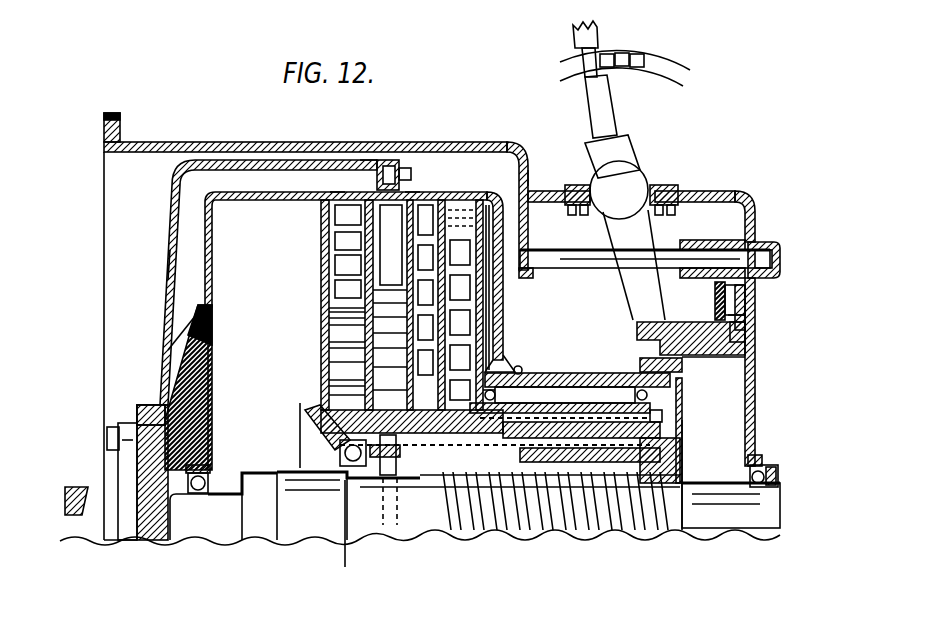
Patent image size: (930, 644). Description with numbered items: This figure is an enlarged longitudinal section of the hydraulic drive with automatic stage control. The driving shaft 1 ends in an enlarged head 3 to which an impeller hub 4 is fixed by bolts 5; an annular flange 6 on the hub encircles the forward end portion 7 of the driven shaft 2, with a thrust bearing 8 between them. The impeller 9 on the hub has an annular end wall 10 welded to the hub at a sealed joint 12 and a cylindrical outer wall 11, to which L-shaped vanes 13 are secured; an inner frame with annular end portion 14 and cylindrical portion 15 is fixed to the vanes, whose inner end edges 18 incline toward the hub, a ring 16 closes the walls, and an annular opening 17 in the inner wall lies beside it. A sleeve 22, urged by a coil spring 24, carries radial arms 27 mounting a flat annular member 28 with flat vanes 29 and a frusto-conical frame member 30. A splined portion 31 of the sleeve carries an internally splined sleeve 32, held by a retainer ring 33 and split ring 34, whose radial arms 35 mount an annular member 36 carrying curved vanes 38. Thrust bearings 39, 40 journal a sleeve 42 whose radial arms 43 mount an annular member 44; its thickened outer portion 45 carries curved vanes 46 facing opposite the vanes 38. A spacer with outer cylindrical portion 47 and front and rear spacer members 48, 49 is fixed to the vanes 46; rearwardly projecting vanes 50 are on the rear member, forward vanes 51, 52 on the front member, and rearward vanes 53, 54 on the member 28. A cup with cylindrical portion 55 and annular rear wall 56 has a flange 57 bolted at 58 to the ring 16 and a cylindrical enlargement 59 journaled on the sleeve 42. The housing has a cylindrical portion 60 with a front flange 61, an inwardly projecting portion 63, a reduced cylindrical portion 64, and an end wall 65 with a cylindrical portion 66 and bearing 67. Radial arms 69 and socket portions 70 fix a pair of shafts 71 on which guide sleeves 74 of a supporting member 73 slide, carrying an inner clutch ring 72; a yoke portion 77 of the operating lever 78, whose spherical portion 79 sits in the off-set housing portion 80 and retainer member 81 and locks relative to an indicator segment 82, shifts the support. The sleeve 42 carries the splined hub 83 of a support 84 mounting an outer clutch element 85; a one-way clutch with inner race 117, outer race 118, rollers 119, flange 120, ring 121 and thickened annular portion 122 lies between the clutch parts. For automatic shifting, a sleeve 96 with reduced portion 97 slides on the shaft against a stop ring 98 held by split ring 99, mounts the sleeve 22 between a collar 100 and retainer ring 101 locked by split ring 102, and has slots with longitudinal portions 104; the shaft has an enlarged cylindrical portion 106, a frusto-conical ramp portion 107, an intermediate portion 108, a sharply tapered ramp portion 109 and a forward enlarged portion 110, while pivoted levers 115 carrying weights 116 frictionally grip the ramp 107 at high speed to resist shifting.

The driving shaft 1 is at (70, 505).
The driven shaft 2 is at (718, 532).
The enlarged head 3 is at (115, 545).
The impeller hub 4 is at (148, 545).
The bolts 5 is at (107, 445).
The annular flange 6 is at (206, 478).
The forward end portion 7 is at (190, 535).
The thrust bearing 8 is at (197, 492).
The impeller 9 is at (152, 297).
The annular end wall 10 is at (169, 264).
The cylindrical outer wall 11 is at (262, 160).
The sealed joint 12 is at (150, 408).
The vanes 13 is at (205, 376).
The annular end portion 14 is at (210, 267).
The cylindrical portion 15 is at (268, 200).
The ring 16 is at (366, 160).
The annular opening 17 is at (340, 195).
The inner end edges 18 is at (175, 345).
The sleeve 22 is at (600, 532).
The coil spring 24 is at (620, 540).
The radial arms 27 is at (365, 368).
The flat annular member 28 is at (366, 258).
The vanes 29 is at (321, 318).
The frusto-conical annular frame member 30 is at (321, 279).
The splined portion 31 is at (590, 387).
The internally splined sleeve 32 is at (565, 386).
The retainer ring 33 is at (690, 421).
The split ring 34 is at (664, 416).
The radial arms 35 is at (500, 329).
The flat annular member 36 is at (486, 313).
The curved vanes 38 is at (398, 322).
The thrust bearing 39 is at (480, 396).
The thrust bearing 40 is at (652, 398).
The sleeve 42 is at (520, 374).
The radial arms 43 is at (500, 350).
The annular member 44 is at (503, 290).
The outer portion 45 is at (488, 200).
The curved vanes 46 is at (458, 205).
The outer cylindrical portion 47 is at (430, 205).
The front spacer member 48 is at (397, 302).
The rear spacer member 49 is at (445, 285).
The curved vanes 50 is at (455, 260).
The curved vanes 51 is at (395, 345).
The curved vanes 52 is at (388, 238).
The curved vanes 53 is at (385, 213).
The curved vanes 54 is at (385, 277).
The cylindrical portion 55 is at (413, 200).
The annular rear wall 56 is at (503, 217).
The outwardly projecting flange 57 is at (395, 165).
The bolted connection 58 is at (405, 170).
The cylindrical enlargement 59 is at (520, 368).
The cylindrical portion 60 is at (178, 142).
The annular flange 61 is at (110, 114).
The annular inwardly projecting portion 63 is at (528, 176).
The reduced diameter cylindrical portion 64 is at (720, 192).
The annular end wall 65 is at (755, 402).
The cylindrical portion 66 is at (762, 460).
The bearing 67 is at (778, 478).
The radial arms 69 is at (533, 275).
The socket portions 70 is at (780, 256).
The longitudinal shafts 71 is at (590, 262).
The inner clutch ring 72 is at (712, 360).
The supporting member 73 is at (748, 330).
The guide sleeves 74 is at (725, 240).
The yoke portion 77 is at (650, 240).
The operating lever 78 is at (610, 114).
The spherical portion 79 is at (640, 175).
The off-set housing portion 80 is at (668, 190).
The inner retainer member 81 is at (592, 215).
The indicator segment 82 is at (656, 62).
The internally splined hub 83 is at (650, 365).
The support 84 is at (637, 346).
The outer clutch element 85 is at (637, 327).
The sleeve 96 is at (556, 532).
The reduced diameter portion 97 is at (658, 532).
The stop ring 98 is at (684, 456).
The split ring 99 is at (683, 476).
The collar 100 is at (502, 532).
The retainer ring 101 is at (665, 432).
The split ring 102 is at (662, 446).
The longitudinal slot portion 104 is at (462, 532).
The enlarged cylindrical portion 106 is at (418, 535).
The frusto-conical ramp portion 107 is at (372, 532).
The intermediate cylindrical portion 108 is at (310, 538).
The sharply tapered ramp portion 109 is at (290, 540).
The forward enlarged portion 110 is at (258, 540).
The levers 115 is at (340, 450).
The weights 116 is at (315, 418).
The inner cylindrical race 117 is at (725, 358).
The outer cylindrical race 118 is at (720, 324).
The rollers 119 is at (750, 340).
The flange 120 is at (757, 315).
The ring 121 is at (715, 298).
The annular portion 122 is at (757, 300).